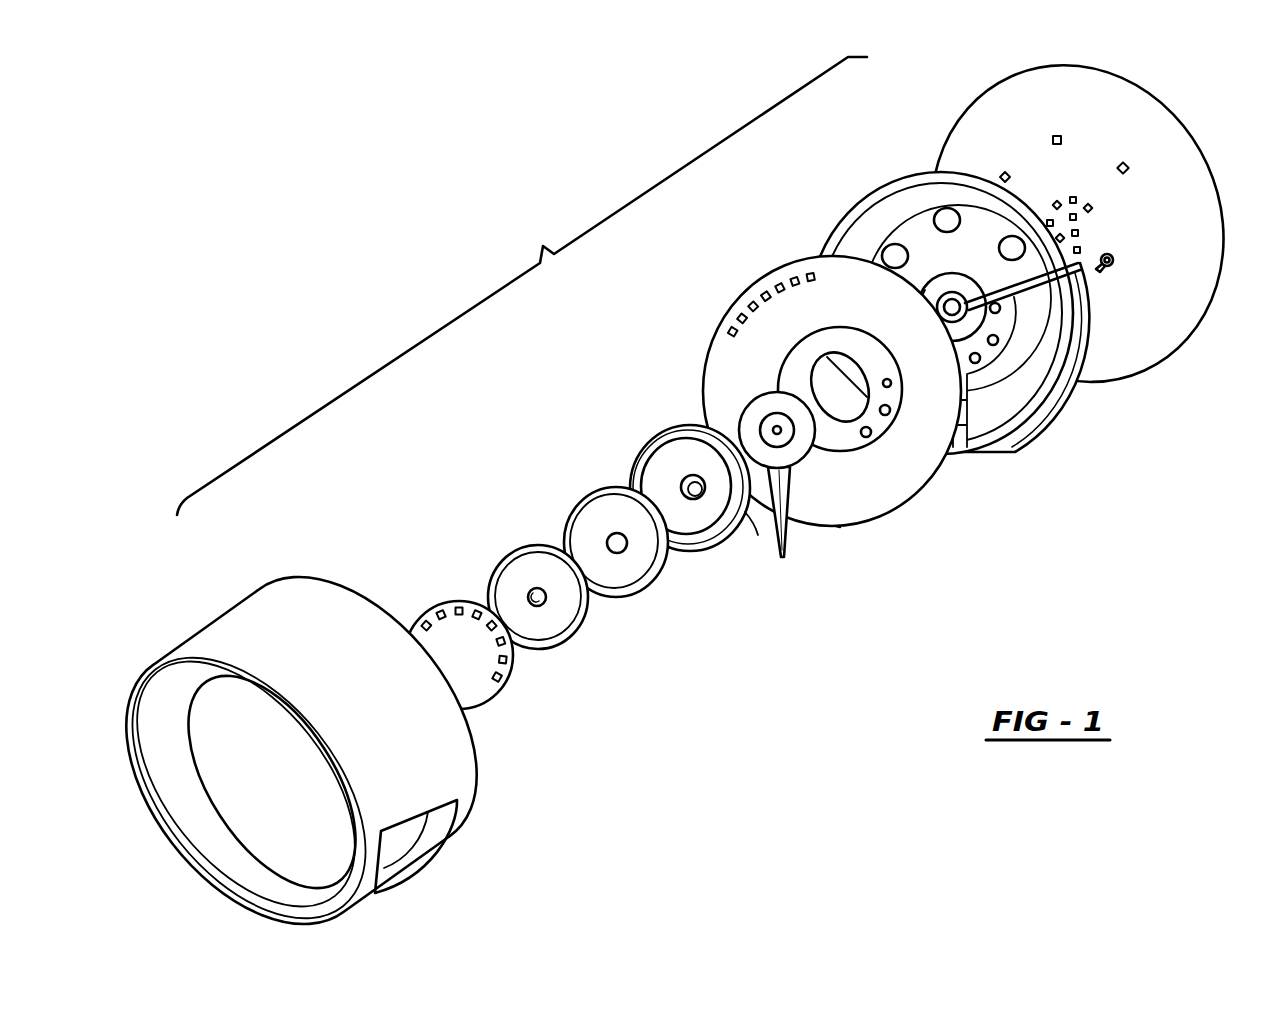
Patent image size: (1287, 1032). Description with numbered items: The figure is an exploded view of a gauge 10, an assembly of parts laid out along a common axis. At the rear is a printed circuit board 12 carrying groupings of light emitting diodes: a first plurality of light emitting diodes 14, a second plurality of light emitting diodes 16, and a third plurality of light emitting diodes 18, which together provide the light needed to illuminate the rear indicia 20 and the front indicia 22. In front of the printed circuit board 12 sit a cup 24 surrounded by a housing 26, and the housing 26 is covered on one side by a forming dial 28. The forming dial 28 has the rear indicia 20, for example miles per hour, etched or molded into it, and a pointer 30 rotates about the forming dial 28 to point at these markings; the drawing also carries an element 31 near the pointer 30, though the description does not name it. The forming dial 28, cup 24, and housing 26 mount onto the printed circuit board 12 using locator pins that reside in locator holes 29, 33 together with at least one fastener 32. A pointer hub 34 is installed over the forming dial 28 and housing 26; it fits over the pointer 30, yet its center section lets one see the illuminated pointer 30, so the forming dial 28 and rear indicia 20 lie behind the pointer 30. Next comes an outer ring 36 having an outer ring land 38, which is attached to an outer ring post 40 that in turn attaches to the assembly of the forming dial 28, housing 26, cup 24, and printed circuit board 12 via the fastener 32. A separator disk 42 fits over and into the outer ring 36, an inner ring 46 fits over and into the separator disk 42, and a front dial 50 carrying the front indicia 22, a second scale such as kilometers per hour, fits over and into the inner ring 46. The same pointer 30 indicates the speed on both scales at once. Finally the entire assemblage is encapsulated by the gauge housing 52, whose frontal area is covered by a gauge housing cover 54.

The gauge 10 is at (681, 268).
The printed circuit board 12 is at (992, 94).
The first plurality of light emitting diodes 14 is at (1076, 200).
The second plurality of light emitting diodes 16 is at (1080, 220).
The third plurality of light emitting diodes 18 is at (1059, 134).
The rear indicia 20 is at (758, 273).
The front indicia 22 is at (510, 657).
The cup 24 is at (872, 198).
The housing 26 is at (1043, 420).
The forming dial 28 is at (708, 338).
The locator hole 29 is at (888, 386).
The pointer 30 is at (840, 525).
The pointer needle 31 is at (785, 543).
The fastener 32 is at (1114, 259).
The locator hole 33 is at (867, 433).
The pointer hub 34 is at (752, 393).
The outer ring 36 is at (663, 429).
The outer ring land 38 is at (690, 552).
The outer ring post 40 is at (752, 520).
The separator disk 42 is at (607, 487).
The inner ring 46 is at (513, 547).
The front dial 50 is at (442, 600).
The gauge housing 52 is at (283, 580).
The gauge housing cover 54 is at (312, 848).